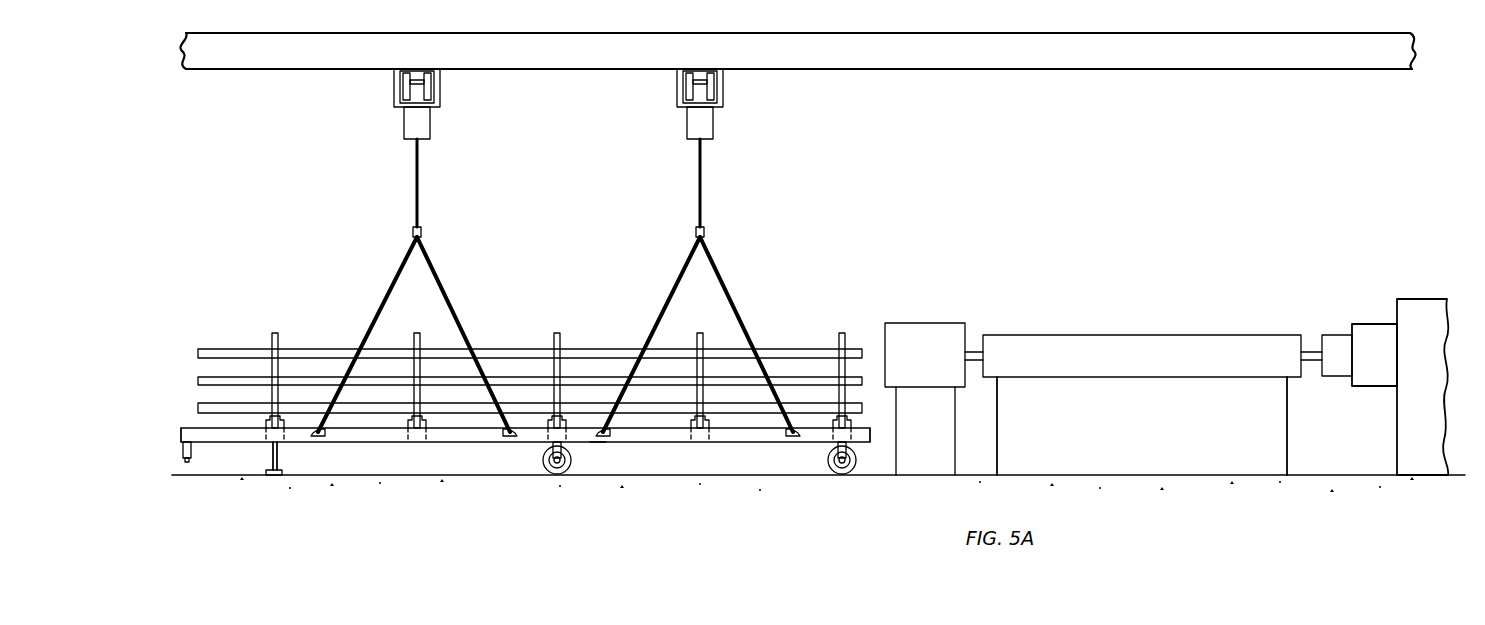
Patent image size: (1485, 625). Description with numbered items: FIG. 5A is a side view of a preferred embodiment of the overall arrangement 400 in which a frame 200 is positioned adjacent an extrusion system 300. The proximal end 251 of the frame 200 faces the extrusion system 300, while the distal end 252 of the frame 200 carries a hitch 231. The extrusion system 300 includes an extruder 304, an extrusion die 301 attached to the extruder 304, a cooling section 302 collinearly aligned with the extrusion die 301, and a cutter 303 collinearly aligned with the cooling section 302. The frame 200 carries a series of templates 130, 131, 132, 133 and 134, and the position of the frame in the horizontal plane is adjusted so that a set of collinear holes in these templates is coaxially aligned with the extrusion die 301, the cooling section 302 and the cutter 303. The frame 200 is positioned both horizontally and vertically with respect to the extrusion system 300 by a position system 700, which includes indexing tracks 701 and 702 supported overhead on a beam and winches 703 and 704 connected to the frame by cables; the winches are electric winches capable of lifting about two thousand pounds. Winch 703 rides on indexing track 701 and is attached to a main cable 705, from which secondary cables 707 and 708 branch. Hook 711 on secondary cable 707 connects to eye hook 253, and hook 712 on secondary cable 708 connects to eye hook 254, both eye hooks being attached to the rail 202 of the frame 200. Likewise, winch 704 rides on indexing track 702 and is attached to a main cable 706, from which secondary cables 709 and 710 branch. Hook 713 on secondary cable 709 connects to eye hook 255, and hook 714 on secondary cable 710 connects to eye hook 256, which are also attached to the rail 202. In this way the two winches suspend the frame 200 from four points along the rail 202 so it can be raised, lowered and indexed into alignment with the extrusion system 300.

The position system 700 is at (533, 252).
The indexing track 701 is at (393, 89).
The indexing track 702 is at (676, 89).
The winch 703 is at (403, 118).
The winch 704 is at (686, 118).
The main cable 705 is at (415, 183).
The main cable 706 is at (698, 183).
The secondary cable 707 is at (399, 282).
The secondary cable 708 is at (453, 291).
The secondary cable 709 is at (682, 282).
The secondary cable 710 is at (737, 291).
The hook 711 is at (316, 430).
The hook 712 is at (516, 430).
The hook 713 is at (601, 430).
The hook 714 is at (804, 430).
The system 400 is at (308, 264).
The frame 200 is at (510, 397).
The rail 202 is at (665, 443).
The template 130 is at (271, 348).
The template 131 is at (413, 356).
The template 132 is at (556, 333).
The template 133 is at (696, 356).
The template 134 is at (845, 333).
The hitch 231 is at (183, 450).
The proximal end 251 is at (877, 435).
The distal end 252 is at (181, 430).
The eye hook 253 is at (312, 437).
The eye hook 254 is at (527, 442).
The eye hook 255 is at (590, 443).
The eye hook 256 is at (810, 443).
The extrusion system 300 is at (1149, 355).
The extrusion die 301 is at (1364, 324).
The cooling section 302 is at (1148, 334).
The cutter 303 is at (924, 323).
The extruder 304 is at (1426, 298).